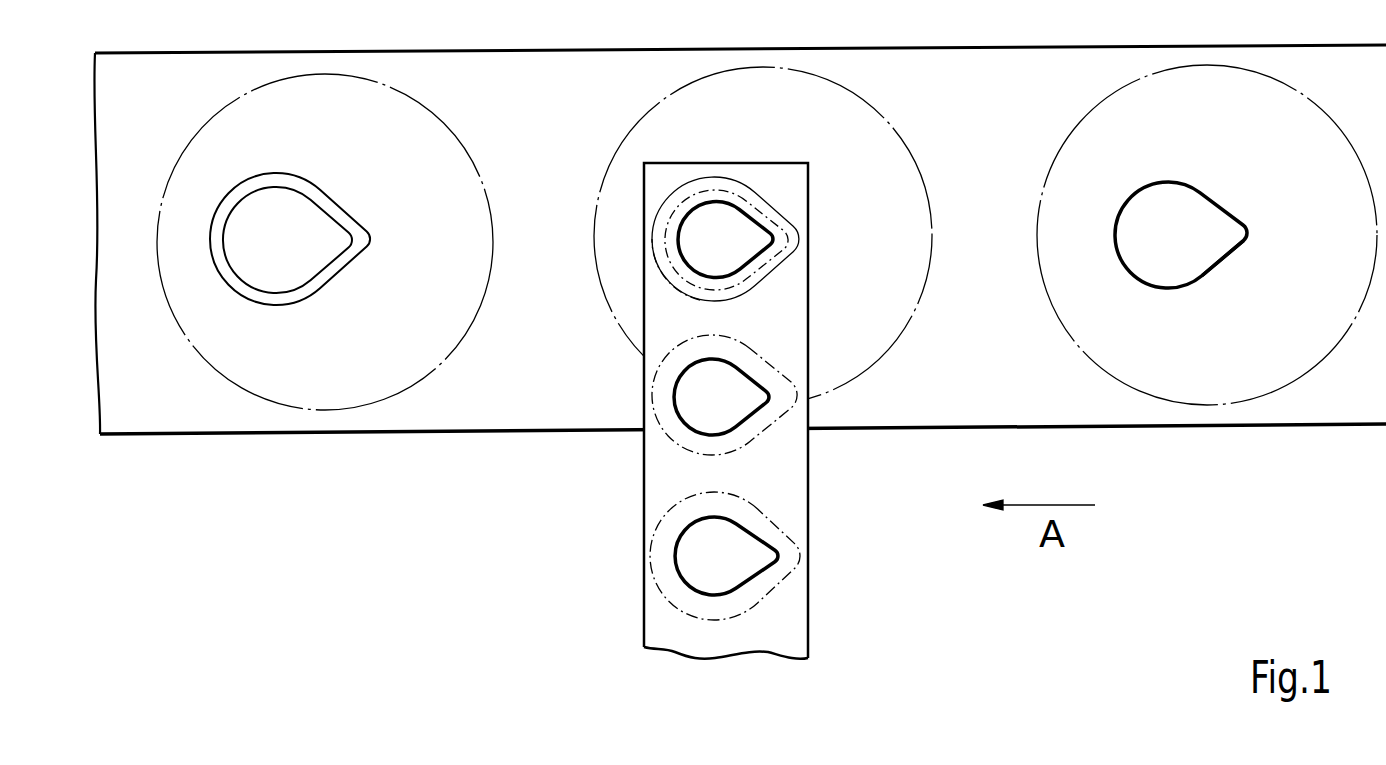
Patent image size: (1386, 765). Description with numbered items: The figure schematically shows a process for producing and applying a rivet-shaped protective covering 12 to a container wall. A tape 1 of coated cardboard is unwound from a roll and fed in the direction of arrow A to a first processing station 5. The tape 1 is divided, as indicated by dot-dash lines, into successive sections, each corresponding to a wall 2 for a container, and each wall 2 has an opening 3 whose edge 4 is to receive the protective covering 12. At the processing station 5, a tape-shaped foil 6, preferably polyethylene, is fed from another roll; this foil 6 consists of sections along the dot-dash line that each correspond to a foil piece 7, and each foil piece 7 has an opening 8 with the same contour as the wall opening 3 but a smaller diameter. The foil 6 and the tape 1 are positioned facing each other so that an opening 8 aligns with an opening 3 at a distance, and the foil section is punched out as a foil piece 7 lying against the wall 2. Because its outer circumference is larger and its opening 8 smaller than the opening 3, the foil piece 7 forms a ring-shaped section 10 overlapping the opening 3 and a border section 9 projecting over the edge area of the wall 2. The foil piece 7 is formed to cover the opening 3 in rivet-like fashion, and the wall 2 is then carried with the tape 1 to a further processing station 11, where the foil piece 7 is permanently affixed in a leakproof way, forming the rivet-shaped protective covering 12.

The tape 1 is at (1013, 412).
The wall 2 is at (290, 395).
The opening 3 is at (1222, 260).
The edge 4 is at (1172, 181).
The first processing station 5 is at (583, 465).
The tape-shaped foil 6 is at (730, 411).
The foil piece 7 is at (667, 283).
The opening 8 is at (747, 248).
The border section 9 is at (780, 207).
The ring-shaped section 10 is at (787, 237).
The processing station 11 is at (168, 455).
The protective covering 12 is at (331, 203).